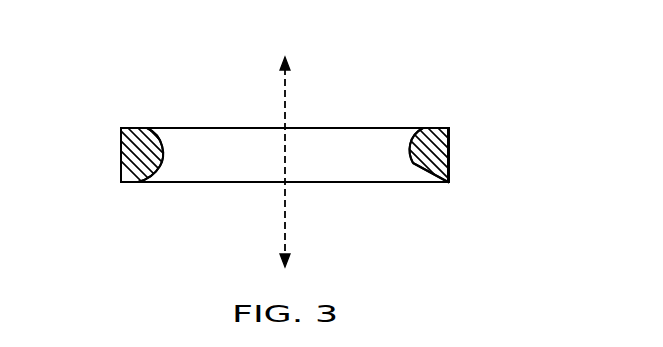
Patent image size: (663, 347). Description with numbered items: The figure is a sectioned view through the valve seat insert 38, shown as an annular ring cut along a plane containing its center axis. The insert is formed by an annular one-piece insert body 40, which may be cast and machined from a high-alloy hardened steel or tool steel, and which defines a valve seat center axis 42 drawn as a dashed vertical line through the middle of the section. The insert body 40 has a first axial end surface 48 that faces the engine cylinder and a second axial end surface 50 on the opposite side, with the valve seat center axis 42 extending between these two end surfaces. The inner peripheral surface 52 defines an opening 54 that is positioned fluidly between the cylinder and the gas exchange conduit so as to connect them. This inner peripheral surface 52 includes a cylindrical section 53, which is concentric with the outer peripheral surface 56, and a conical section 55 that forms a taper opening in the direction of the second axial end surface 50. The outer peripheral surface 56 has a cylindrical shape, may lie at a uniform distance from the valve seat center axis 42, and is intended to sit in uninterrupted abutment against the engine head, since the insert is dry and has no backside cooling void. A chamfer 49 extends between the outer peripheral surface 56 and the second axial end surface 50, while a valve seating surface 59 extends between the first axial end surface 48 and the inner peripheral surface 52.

The valve seat insert 38 is at (532, 110).
The insert body 40 is at (440, 128).
The valve seat center axis 42 is at (285, 238).
The first axial end surface 48 is at (121, 182).
The chamfer 49 is at (121, 128).
The second axial end surface 50 is at (138, 128).
The inner peripheral surface 52 is at (165, 149).
The cylindrical section 53 is at (413, 163).
The opening 54 is at (248, 160).
The conical section 55 is at (411, 130).
The outer peripheral surface 56 is at (116, 155).
The valve seating surface 59 is at (150, 185).